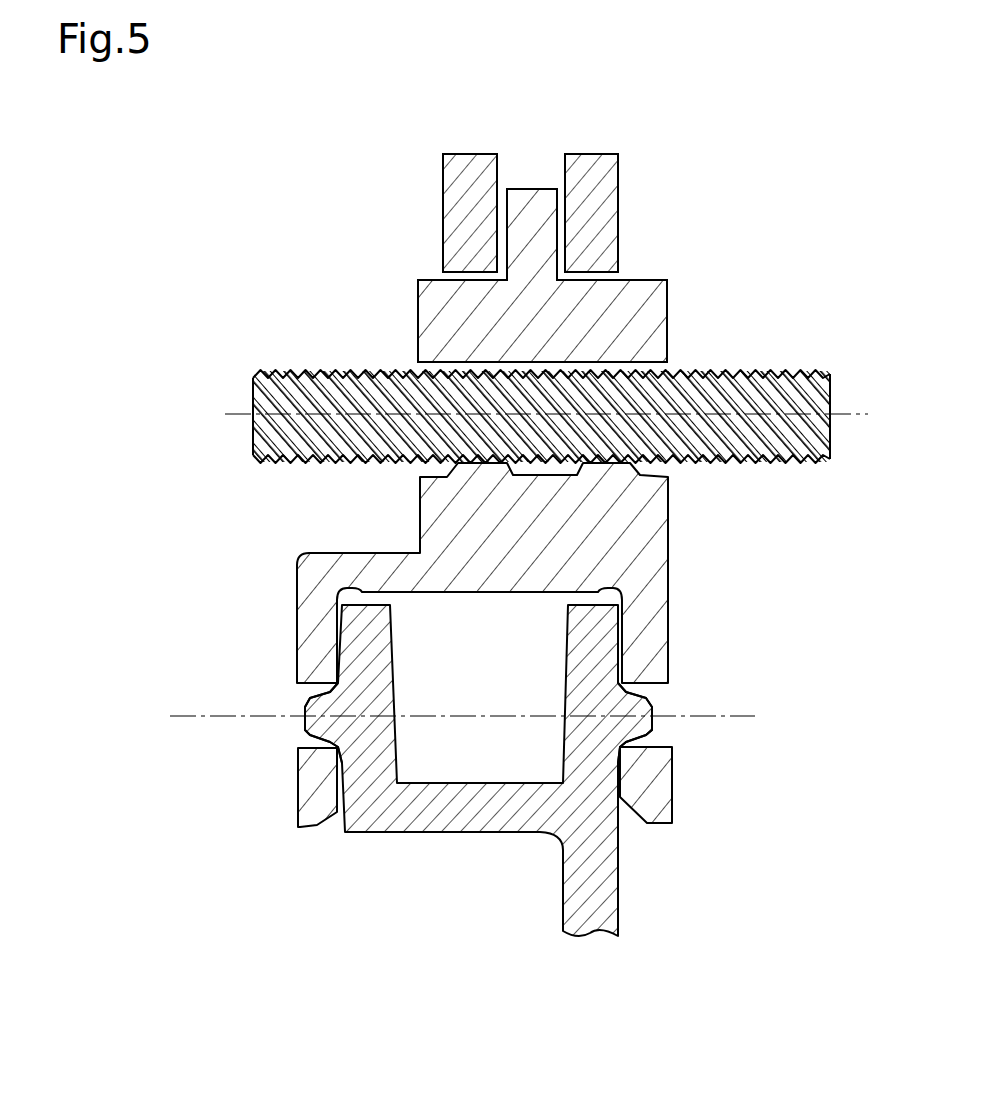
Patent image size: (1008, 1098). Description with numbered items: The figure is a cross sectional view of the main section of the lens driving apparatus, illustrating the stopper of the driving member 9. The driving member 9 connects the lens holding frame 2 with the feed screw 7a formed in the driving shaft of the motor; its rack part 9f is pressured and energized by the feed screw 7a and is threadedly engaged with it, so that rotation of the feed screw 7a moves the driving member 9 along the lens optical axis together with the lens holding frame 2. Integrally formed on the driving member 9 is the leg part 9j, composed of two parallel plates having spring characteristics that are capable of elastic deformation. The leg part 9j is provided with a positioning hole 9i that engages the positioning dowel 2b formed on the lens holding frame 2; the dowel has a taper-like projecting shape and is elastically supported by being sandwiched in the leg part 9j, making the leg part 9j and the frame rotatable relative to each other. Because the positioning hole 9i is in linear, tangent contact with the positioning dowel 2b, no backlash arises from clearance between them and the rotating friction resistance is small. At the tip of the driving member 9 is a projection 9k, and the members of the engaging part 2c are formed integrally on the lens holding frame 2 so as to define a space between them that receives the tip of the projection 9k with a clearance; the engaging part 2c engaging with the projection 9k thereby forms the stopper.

The lens holding frame 2 is at (610, 897).
The positioning dowel 2b is at (653, 705).
The engaging part 2c is at (618, 186).
The feed screw 7a is at (823, 435).
The driving member 9 is at (655, 312).
The rack part 9f is at (470, 362).
The positioning hole 9i is at (297, 677).
The leg part 9j is at (310, 615).
The projection 9k is at (541, 190).